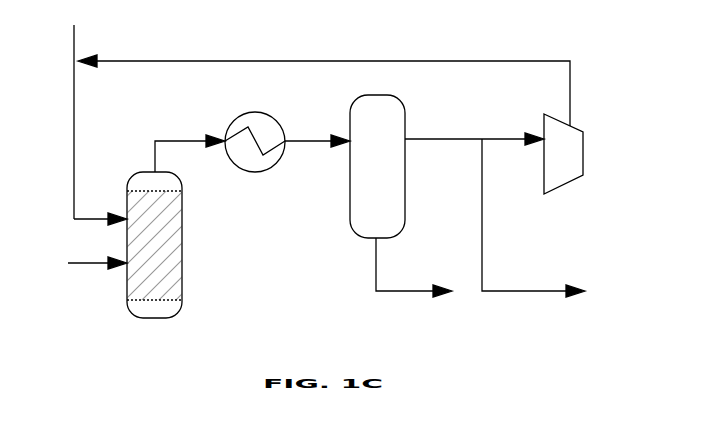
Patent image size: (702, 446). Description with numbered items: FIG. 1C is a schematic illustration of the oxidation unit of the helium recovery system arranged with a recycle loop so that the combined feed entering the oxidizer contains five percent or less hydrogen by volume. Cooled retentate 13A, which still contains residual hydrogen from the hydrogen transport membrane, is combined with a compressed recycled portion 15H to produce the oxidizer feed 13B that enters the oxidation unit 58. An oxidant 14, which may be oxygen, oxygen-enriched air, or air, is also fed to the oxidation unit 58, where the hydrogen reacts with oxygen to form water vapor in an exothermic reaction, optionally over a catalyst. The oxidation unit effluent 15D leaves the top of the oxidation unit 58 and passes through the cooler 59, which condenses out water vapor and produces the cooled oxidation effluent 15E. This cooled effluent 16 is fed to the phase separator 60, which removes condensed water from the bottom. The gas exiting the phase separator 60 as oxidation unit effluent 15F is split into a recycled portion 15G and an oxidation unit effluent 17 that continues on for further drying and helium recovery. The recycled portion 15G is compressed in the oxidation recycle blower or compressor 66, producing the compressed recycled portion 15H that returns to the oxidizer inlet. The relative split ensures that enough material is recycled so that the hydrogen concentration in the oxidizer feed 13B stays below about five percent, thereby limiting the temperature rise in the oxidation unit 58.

The cooled retentate 13A is at (61, 122).
The oxidizer feed 13B is at (86, 207).
The oxidant 14 is at (97, 271).
The oxidation unit effluent 15D is at (190, 153).
The cooled oxidation effluent 15E is at (317, 151).
The oxidation unit effluent 15F is at (443, 152).
The recycled portion 15G is at (513, 149).
The compressed recycled portion 15H is at (324, 81).
The cooled effluent 16 is at (414, 267).
The oxidation unit effluent 17 is at (533, 218).
The oxidation unit 58 is at (154, 245).
The cooler 59 is at (255, 156).
The phase separator 60 is at (377, 166).
The oxidation recycle blower or compressor 66 is at (563, 154).